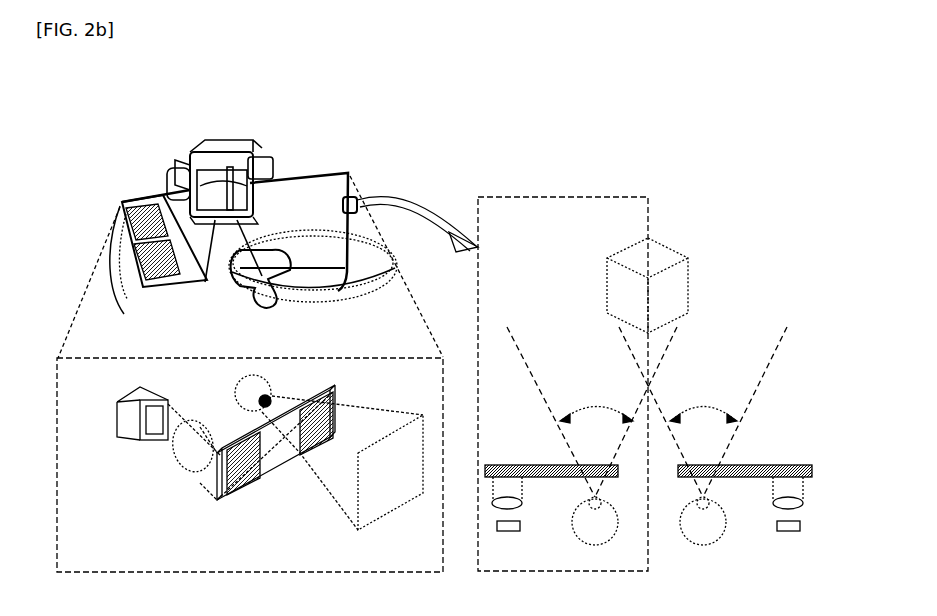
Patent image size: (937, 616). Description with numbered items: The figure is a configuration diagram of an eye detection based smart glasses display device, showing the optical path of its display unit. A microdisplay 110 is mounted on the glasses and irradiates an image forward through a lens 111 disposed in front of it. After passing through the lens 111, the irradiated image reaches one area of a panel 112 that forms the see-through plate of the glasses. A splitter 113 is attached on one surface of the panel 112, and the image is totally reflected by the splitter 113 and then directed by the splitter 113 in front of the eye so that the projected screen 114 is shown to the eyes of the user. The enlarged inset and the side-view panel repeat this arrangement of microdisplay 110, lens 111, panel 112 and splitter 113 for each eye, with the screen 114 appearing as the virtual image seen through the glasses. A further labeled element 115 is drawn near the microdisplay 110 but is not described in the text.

The microdisplay 110 is at (252, 148).
The lens 111 is at (178, 468).
The panel 112 is at (215, 500).
The splitter 113 is at (808, 427).
The screen 114 is at (380, 513).
The connector 115 is at (190, 167).